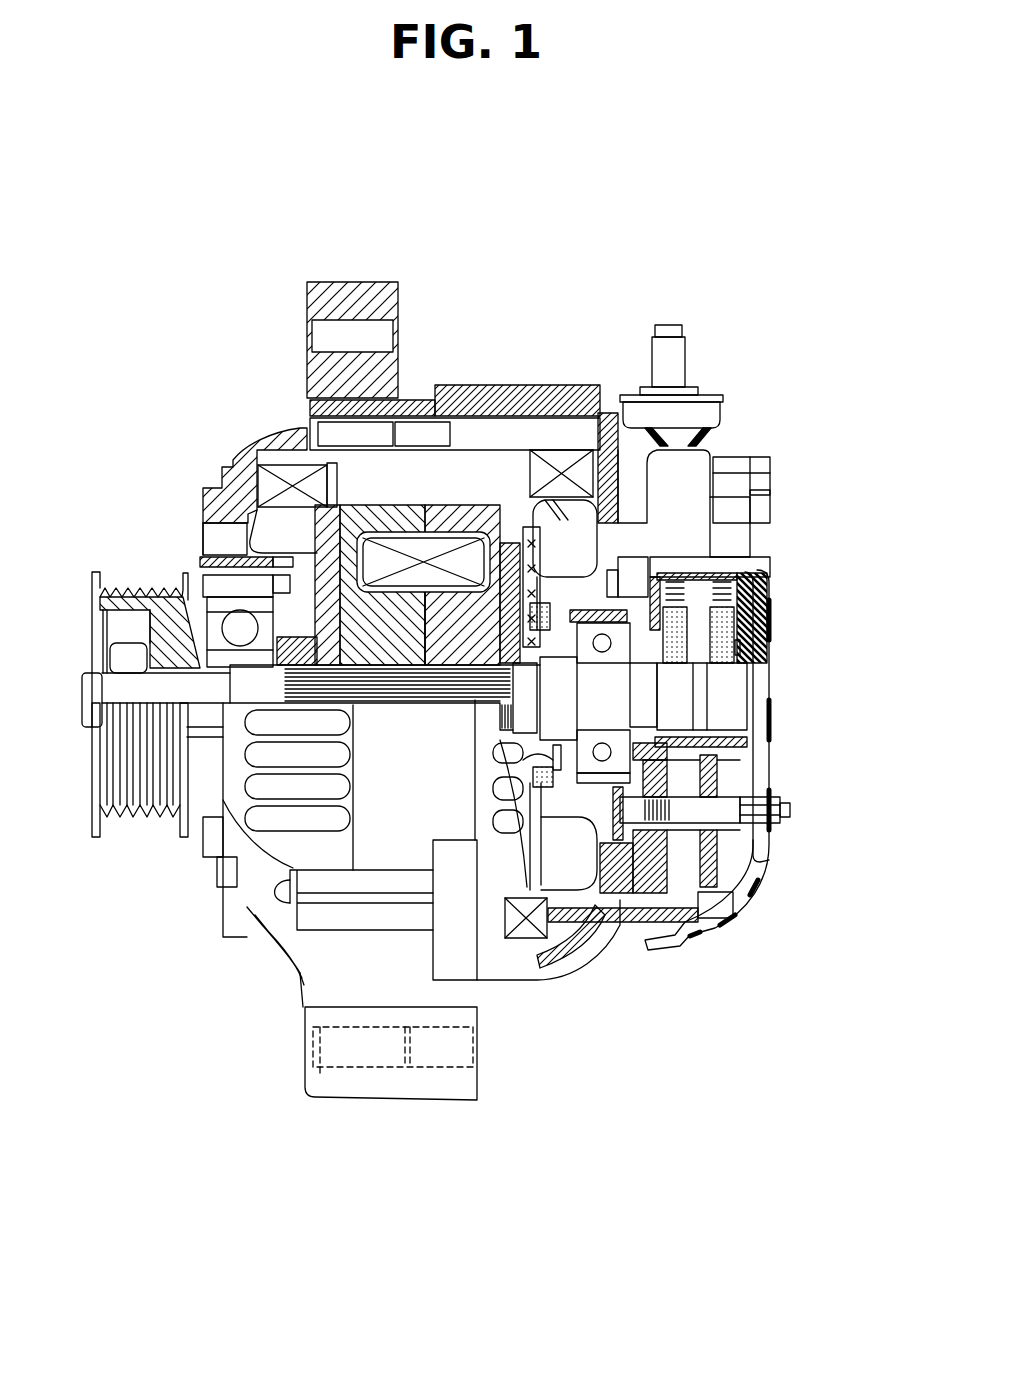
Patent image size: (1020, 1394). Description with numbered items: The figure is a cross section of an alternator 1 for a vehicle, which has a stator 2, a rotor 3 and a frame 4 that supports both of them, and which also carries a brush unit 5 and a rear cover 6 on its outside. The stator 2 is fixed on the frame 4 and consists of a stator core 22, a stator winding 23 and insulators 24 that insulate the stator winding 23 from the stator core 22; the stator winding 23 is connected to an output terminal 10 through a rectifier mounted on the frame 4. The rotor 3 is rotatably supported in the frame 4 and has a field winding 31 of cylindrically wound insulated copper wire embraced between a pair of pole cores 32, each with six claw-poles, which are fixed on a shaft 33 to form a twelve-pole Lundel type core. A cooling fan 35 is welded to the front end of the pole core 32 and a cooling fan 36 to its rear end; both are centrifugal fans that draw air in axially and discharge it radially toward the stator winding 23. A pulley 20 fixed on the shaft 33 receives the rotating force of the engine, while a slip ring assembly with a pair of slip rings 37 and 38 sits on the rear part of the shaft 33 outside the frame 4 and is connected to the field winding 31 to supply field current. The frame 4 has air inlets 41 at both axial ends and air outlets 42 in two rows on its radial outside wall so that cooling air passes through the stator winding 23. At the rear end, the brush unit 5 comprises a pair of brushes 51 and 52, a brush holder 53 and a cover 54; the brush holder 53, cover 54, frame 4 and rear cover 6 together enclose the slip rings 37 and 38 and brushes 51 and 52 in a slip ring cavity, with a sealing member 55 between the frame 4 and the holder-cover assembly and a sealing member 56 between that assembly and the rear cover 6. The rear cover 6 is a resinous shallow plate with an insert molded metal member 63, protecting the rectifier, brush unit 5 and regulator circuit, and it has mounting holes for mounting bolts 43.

The alternator 1 is at (740, 325).
The stator 2 is at (532, 600).
The rotor 3 is at (320, 616).
The frame 4 is at (330, 977).
The brush unit 5 is at (755, 622).
The rear cover 6 is at (743, 897).
The output terminal 10 is at (667, 343).
The pulley 20 is at (100, 585).
The stator core 22 is at (482, 453).
The stator winding 23 is at (673, 427).
The insulators 24 is at (577, 445).
The field winding 31 is at (403, 547).
The pole cores 32 is at (452, 570).
The shaft 33 is at (172, 677).
The cooling fan 35 is at (272, 527).
The cooling fan 36 is at (770, 473).
The slip ring 37 is at (673, 708).
The slip ring 38 is at (737, 684).
The air inlets 41 is at (210, 540).
The air outlets 42 is at (287, 820).
The mounting bolts 43 is at (780, 810).
The brush 51 is at (735, 600).
The brush 52 is at (735, 624).
The brush holder 53 is at (750, 576).
The cover 54 is at (723, 750).
The sealing member 55 is at (607, 540).
The sealing member 56 is at (743, 650).
The insert molded metal member 63 is at (760, 848).